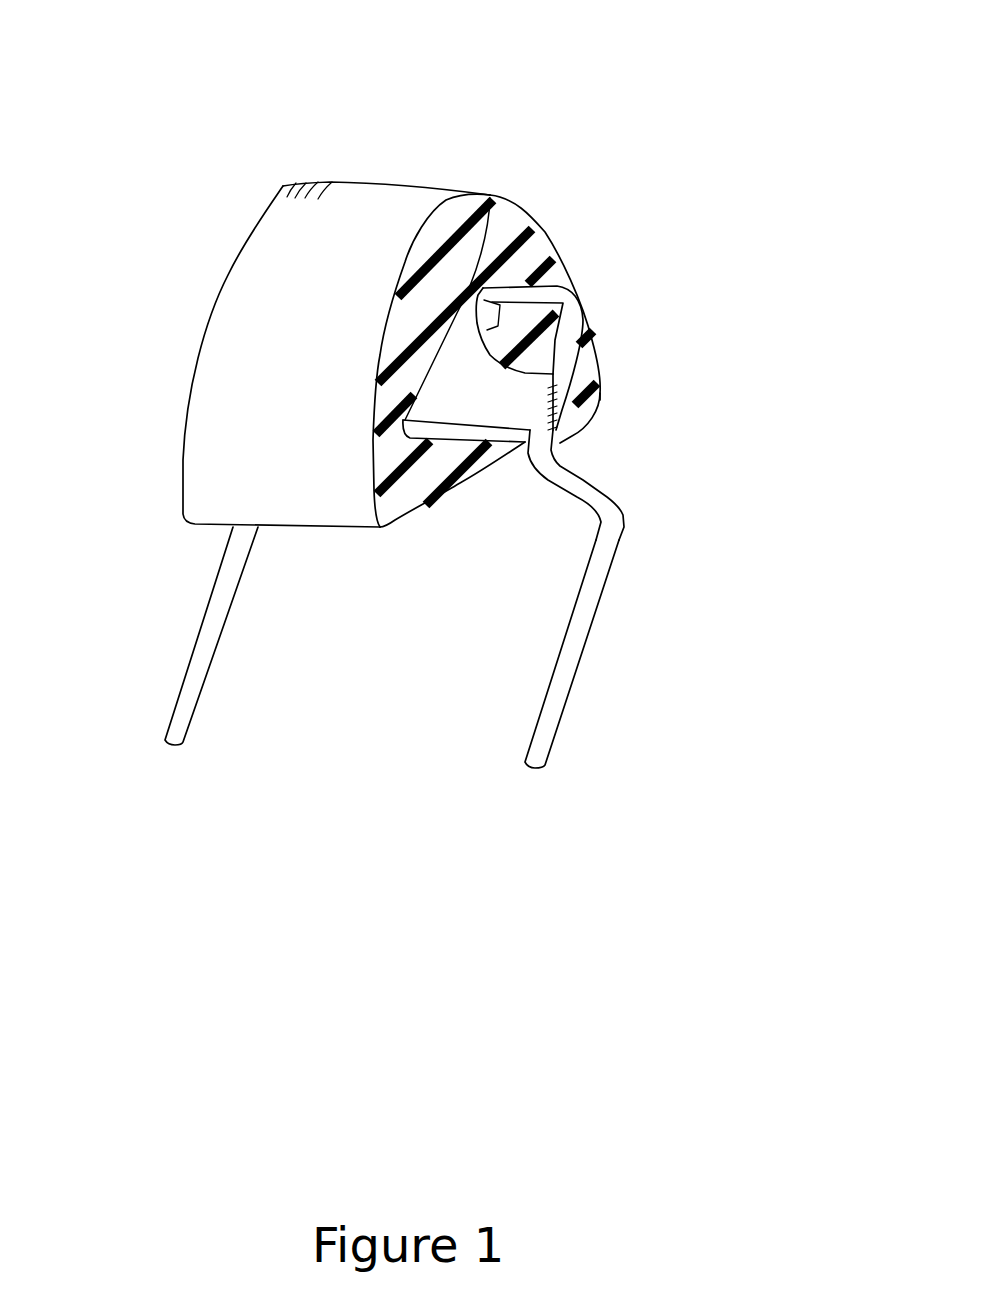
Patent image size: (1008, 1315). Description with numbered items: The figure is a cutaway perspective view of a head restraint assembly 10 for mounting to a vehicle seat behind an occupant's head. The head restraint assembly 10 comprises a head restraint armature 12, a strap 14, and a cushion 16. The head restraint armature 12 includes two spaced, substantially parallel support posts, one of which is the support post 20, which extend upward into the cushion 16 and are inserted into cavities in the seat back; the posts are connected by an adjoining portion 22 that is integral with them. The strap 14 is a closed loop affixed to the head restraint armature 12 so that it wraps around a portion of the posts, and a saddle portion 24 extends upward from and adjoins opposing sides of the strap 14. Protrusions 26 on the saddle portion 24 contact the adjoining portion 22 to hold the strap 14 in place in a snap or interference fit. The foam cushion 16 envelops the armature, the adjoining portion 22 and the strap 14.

The head restraint assembly 10 is at (341, 88).
The head restraint armature 12 is at (640, 487).
The strap 14 is at (563, 390).
The cushion 16 is at (260, 305).
The support post 20 is at (587, 616).
The adjoining portion 22 is at (558, 296).
The saddle portion 24 is at (484, 283).
The protrusions 26 is at (545, 240).